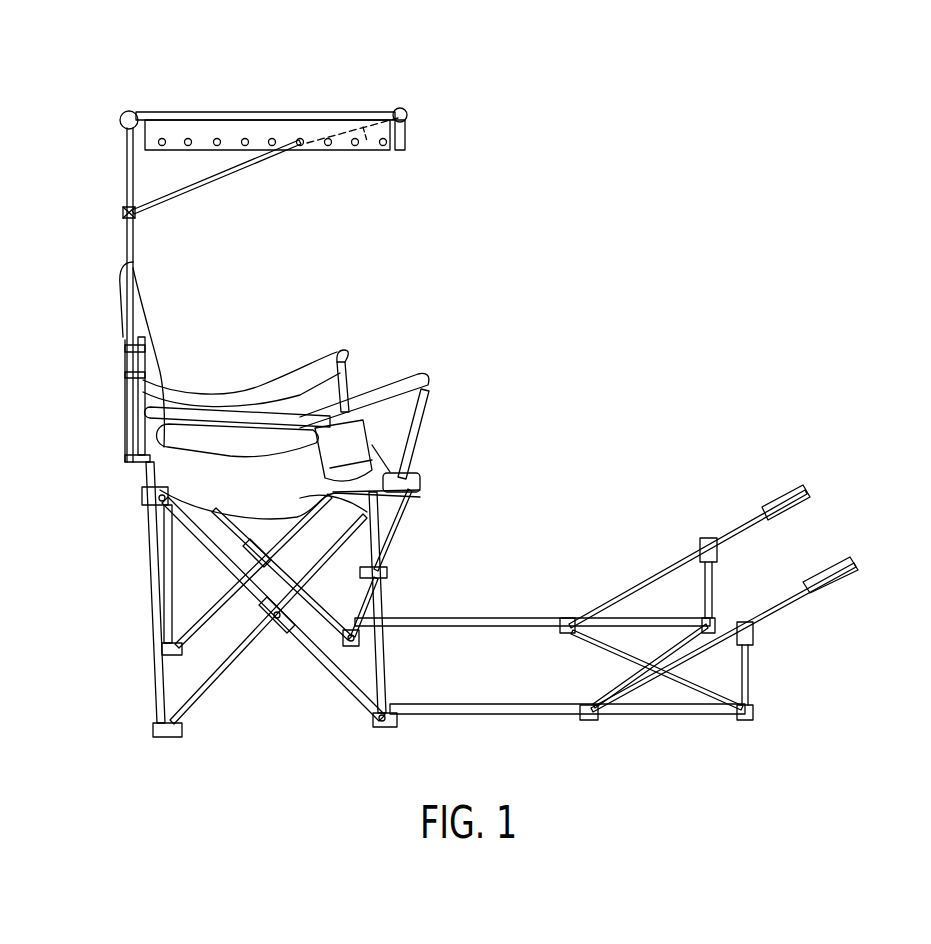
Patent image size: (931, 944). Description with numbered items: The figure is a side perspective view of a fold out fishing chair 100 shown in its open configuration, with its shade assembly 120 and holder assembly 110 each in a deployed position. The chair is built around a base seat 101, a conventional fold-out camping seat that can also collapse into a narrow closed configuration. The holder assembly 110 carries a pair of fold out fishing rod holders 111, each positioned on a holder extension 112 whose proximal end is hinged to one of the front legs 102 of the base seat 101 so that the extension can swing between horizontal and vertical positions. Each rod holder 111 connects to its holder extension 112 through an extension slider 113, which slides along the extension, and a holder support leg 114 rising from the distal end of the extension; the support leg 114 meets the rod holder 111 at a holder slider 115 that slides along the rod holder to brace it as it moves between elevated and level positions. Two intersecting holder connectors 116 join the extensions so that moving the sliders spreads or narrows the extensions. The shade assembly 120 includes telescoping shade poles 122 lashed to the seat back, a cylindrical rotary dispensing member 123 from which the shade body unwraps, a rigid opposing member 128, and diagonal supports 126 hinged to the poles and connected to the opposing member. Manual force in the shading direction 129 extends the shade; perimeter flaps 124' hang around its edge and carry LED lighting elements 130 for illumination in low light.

The fold out fishing chair 100 is at (558, 268).
The base seat 101 is at (205, 503).
The front legs 102 is at (386, 648).
The holder assembly 110 is at (553, 553).
The fold out fishing rod holder 111 is at (797, 604).
The holder extension 112 is at (560, 716).
The extension slider 113 is at (565, 619).
The holder support leg 114 is at (712, 578).
The holder slider 115 is at (753, 638).
The holder connector 116 is at (597, 648).
The shade assembly 120 is at (110, 172).
The telescoping shade pole 122 is at (126, 199).
The dispensing member 123 is at (131, 116).
The perimeter flaps 124' is at (389, 108).
The diagonal support 126 is at (210, 189).
The opposing member 128 is at (408, 115).
The shading direction 129 is at (264, 96).
The LED lighting element 130 is at (247, 150).